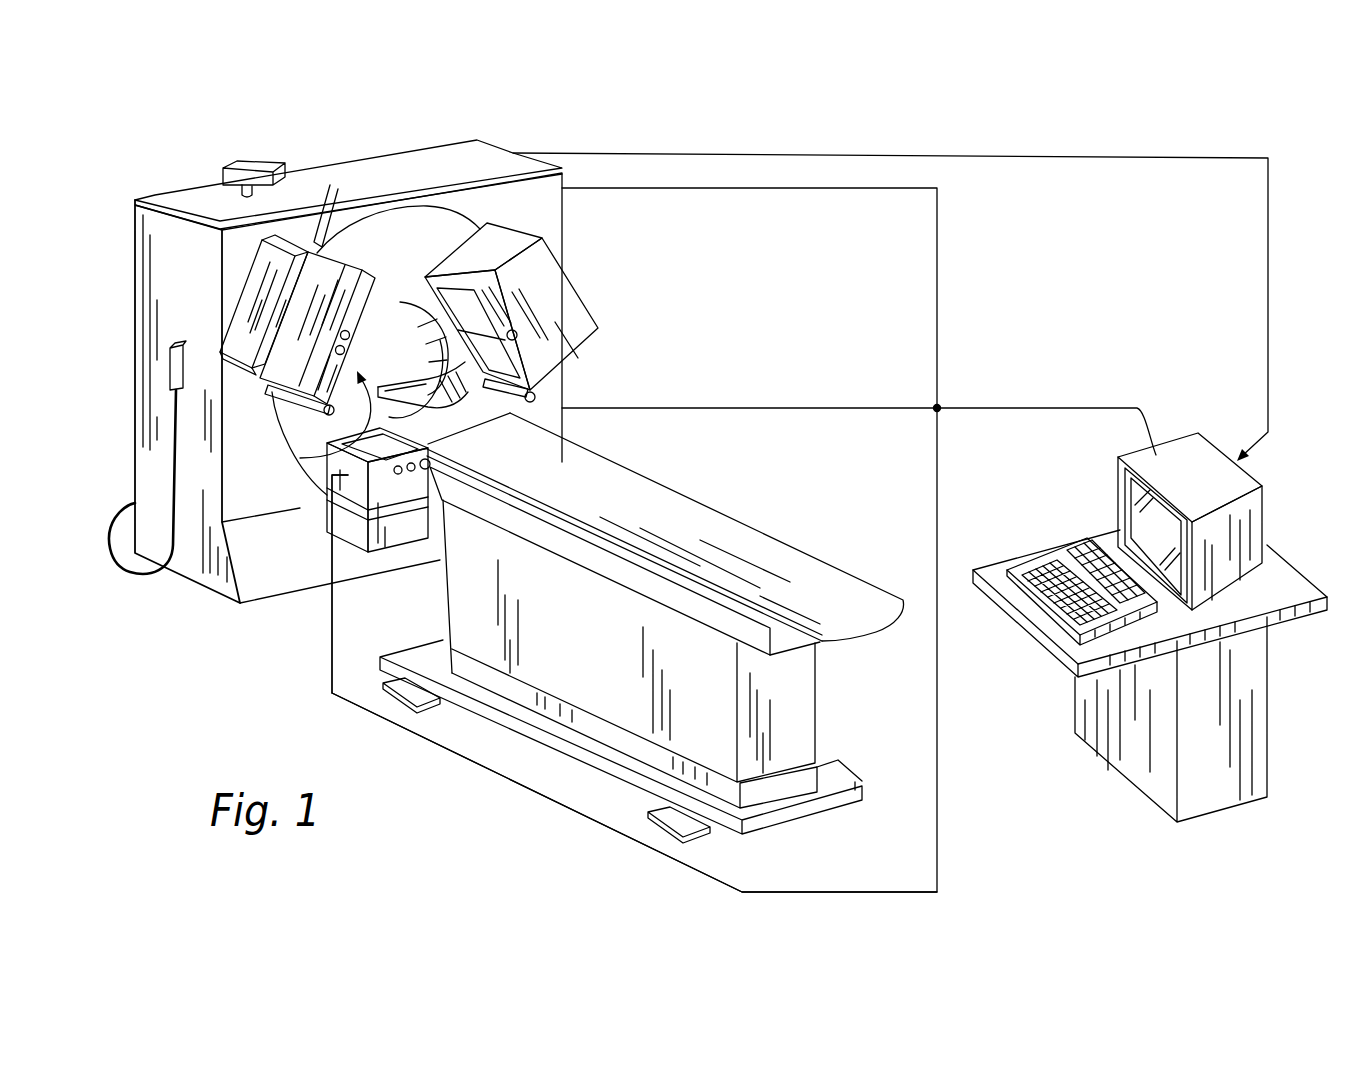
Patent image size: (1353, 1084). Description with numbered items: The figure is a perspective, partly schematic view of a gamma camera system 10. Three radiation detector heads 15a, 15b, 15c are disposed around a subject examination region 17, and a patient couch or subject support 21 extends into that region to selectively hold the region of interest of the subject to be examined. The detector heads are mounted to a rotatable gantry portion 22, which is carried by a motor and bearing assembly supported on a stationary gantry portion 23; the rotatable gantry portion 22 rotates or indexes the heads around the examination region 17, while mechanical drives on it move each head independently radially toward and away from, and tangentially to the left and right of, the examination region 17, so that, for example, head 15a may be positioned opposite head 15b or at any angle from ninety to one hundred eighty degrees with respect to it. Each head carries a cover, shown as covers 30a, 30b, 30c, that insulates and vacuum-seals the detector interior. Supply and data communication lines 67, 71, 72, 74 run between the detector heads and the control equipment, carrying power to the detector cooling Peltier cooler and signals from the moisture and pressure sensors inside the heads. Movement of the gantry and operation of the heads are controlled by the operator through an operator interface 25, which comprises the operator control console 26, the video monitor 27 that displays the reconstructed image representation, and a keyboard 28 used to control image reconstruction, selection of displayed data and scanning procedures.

The gamma camera system 10 is at (176, 158).
The stationary gantry portion 23 is at (343, 170).
The subject examination region 17 is at (362, 410).
The radiation detector head 15a is at (588, 297).
The radiation detector head 15b is at (260, 267).
The radiation detector head 15c is at (400, 537).
The rotatable gantry portion 22 is at (536, 400).
The subject support 21 is at (787, 522).
The detector motion direction A 30a is at (421, 292).
The detector motion direction B 30b is at (385, 292).
The detector motion direction C 30c is at (300, 458).
The supply line 67 is at (937, 272).
The control cable 71 is at (1045, 430).
The line of data communication 72 is at (340, 584).
The line of data communication 74 is at (634, 792).
The operator interface 25 is at (1172, 410).
The control console 26 is at (1263, 520).
The video monitor 27 is at (1143, 527).
The keyboard 28 is at (1029, 532).